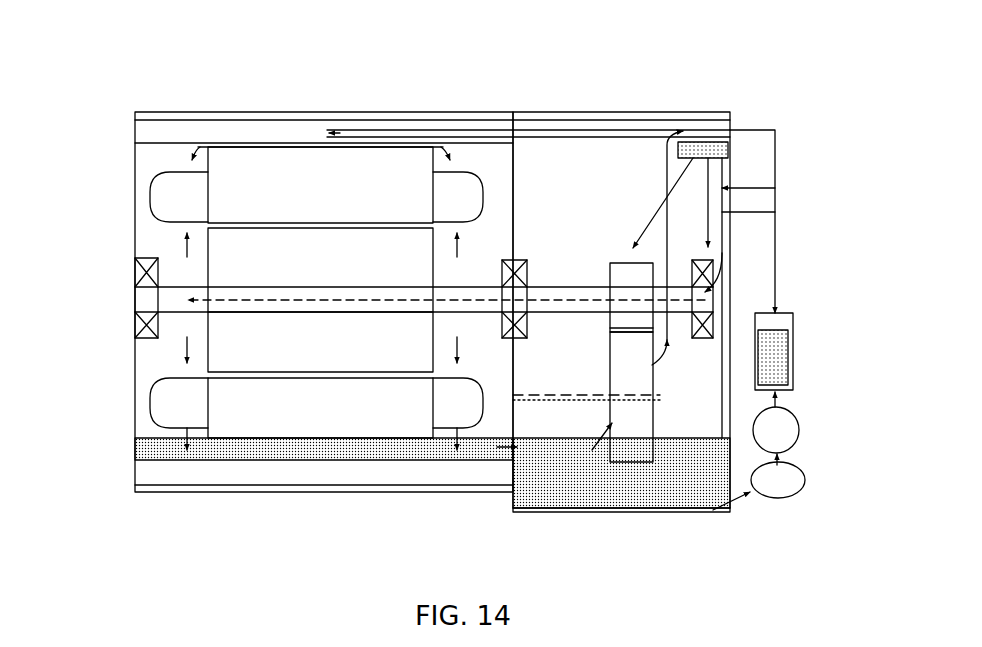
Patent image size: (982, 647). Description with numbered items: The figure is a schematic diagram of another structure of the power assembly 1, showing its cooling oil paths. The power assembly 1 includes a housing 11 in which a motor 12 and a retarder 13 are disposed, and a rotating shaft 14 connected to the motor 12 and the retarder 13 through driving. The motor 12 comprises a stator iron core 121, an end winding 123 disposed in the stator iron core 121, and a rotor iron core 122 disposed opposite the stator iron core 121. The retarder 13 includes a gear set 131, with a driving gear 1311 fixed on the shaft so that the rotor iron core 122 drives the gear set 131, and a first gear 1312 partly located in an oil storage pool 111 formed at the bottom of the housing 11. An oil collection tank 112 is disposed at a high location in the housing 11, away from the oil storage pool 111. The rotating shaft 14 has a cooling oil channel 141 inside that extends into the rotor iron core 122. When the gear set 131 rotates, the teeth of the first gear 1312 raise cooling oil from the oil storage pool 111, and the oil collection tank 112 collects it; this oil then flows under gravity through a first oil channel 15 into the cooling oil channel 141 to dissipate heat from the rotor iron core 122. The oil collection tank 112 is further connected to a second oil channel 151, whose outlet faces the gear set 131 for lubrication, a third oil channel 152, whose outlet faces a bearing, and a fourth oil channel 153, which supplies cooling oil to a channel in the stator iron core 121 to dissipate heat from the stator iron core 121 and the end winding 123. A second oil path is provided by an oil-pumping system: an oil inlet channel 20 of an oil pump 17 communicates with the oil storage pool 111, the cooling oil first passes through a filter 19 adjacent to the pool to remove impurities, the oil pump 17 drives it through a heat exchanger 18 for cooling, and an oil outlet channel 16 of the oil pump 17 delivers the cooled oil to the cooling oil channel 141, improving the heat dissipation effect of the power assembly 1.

The power assembly 1 is at (176, 46).
The housing 11 is at (345, 493).
The oil storage pool 111 is at (660, 500).
The oil collection tank 112 is at (722, 150).
The motor 12 is at (480, 100).
The stator iron core 121 is at (228, 163).
The rotor iron core 122 is at (228, 247).
The end winding 123 is at (175, 203).
The retarder 13 is at (722, 100).
The gear set 131 is at (541, 376).
The driving gear 1311 is at (620, 266).
The first gear 1312 is at (640, 423).
The rotating shaft 14 is at (345, 290).
The cooling oil channel 141 is at (378, 314).
The first oil channel 15 is at (775, 210).
The oil outlet channel 16 is at (742, 188).
The second oil channel 151 is at (647, 217).
The third oil channel 152 is at (708, 222).
The fourth oil channel 153 is at (615, 137).
The oil pump 17 is at (775, 428).
The heat exchanger 18 is at (773, 355).
The filter 19 is at (778, 480).
The oil inlet channel 20 is at (752, 496).